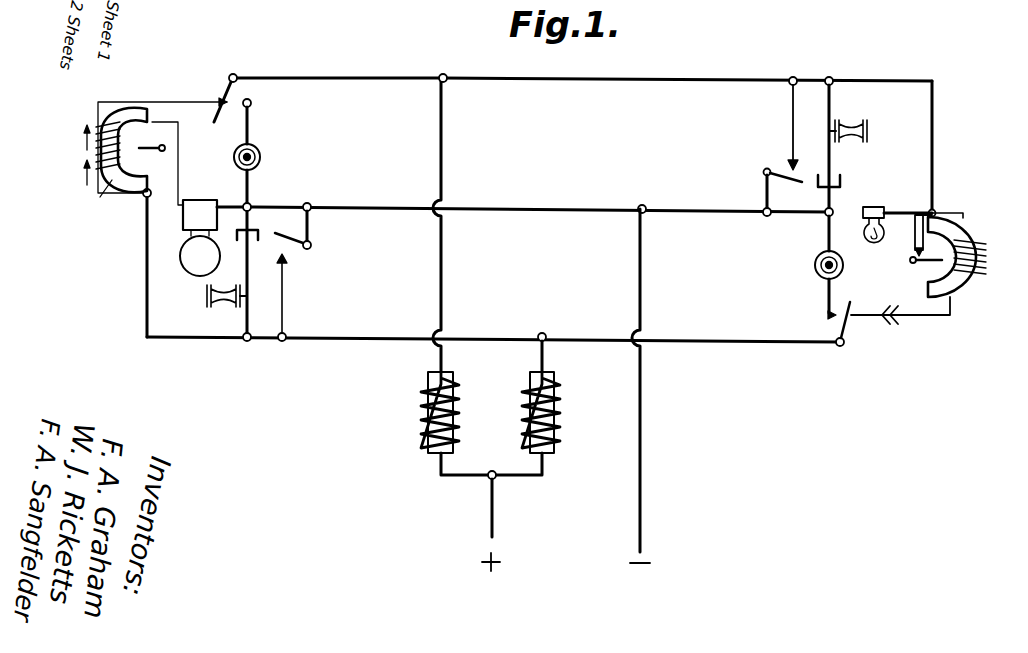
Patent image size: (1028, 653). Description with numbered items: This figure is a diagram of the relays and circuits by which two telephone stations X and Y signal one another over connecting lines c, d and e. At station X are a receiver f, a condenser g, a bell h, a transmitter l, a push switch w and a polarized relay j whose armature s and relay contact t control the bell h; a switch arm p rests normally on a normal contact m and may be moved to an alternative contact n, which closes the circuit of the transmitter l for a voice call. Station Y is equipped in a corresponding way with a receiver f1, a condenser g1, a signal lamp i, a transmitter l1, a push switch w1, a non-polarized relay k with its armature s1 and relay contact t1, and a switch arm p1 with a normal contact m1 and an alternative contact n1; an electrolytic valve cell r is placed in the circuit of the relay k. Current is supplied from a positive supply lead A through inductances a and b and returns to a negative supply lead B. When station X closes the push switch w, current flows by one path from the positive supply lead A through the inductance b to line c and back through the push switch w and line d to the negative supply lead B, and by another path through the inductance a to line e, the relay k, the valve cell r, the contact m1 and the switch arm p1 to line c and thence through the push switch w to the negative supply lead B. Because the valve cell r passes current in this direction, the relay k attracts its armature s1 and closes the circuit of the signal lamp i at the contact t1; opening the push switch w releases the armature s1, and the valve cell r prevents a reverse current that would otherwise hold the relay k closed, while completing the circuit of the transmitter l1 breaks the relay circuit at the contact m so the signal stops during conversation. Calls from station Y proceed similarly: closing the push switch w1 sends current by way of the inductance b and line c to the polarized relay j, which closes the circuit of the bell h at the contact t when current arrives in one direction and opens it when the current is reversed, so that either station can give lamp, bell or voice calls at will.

The station X is at (155, 202).
The station Y is at (948, 149).
The relay contact t is at (152, 138).
The relay armature s is at (165, 152).
The polarized relay j is at (100, 200).
The switch arm p is at (231, 72).
The normal contact m is at (209, 129).
The alternative contact n is at (252, 103).
The transmitter l is at (251, 242).
The condenser g is at (266, 222).
The bell h is at (200, 238).
The receiver f is at (207, 296).
The push switch w is at (298, 240).
The line e is at (478, 84).
The line d is at (474, 214).
The line c is at (490, 340).
The inductance a is at (443, 423).
The inductance b is at (536, 404).
The positive supply lead A is at (500, 521).
The negative supply lead B is at (648, 386).
The push switch w1 is at (784, 146).
The receiver f1 is at (868, 132).
The condenser g1 is at (841, 180).
The transmitter l1 is at (818, 243).
The alternative contact n1 is at (826, 315).
The switch arm p1 is at (847, 338).
The normal contact m1 is at (855, 318).
The electrolytic valve cell r is at (900, 320).
The non-polarized relay k is at (980, 258).
The relay contact t1 is at (913, 250).
The relay armature s1 is at (912, 262).
The signal lamp i is at (896, 236).